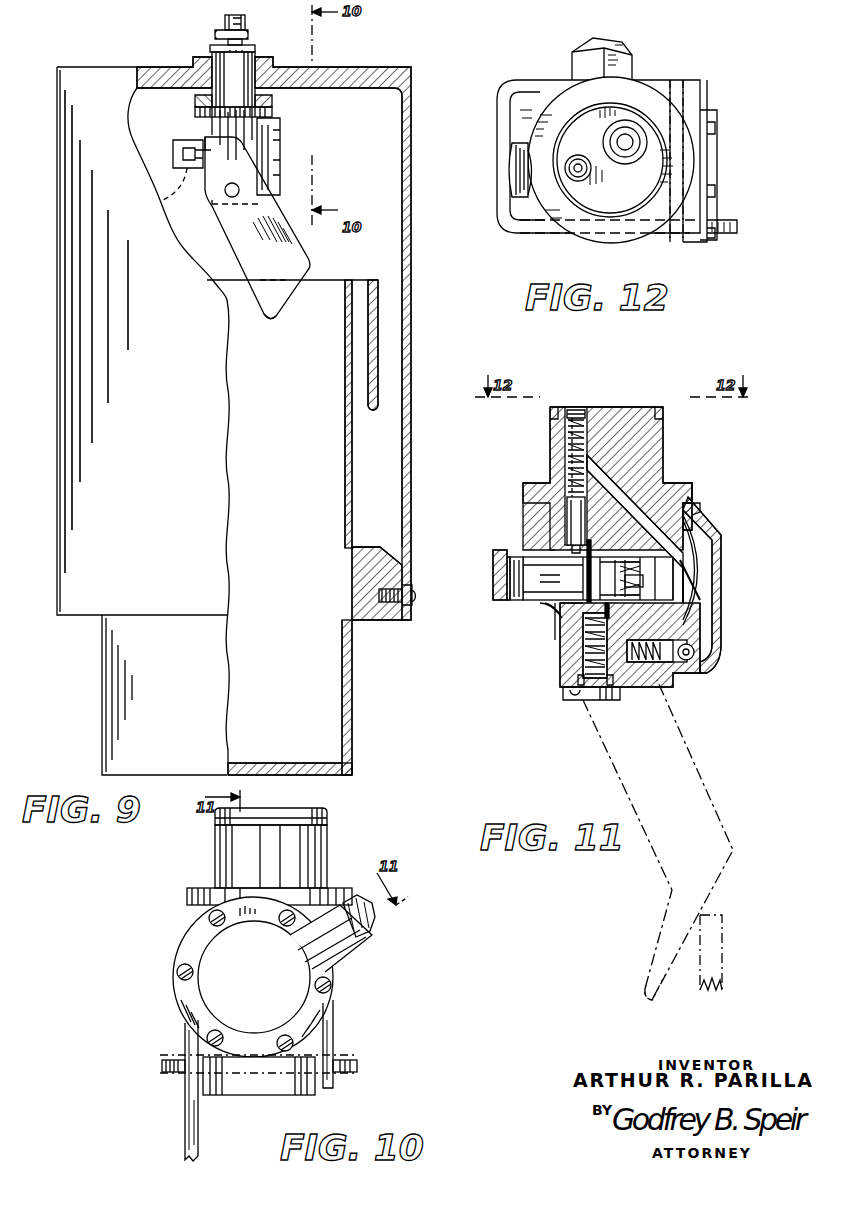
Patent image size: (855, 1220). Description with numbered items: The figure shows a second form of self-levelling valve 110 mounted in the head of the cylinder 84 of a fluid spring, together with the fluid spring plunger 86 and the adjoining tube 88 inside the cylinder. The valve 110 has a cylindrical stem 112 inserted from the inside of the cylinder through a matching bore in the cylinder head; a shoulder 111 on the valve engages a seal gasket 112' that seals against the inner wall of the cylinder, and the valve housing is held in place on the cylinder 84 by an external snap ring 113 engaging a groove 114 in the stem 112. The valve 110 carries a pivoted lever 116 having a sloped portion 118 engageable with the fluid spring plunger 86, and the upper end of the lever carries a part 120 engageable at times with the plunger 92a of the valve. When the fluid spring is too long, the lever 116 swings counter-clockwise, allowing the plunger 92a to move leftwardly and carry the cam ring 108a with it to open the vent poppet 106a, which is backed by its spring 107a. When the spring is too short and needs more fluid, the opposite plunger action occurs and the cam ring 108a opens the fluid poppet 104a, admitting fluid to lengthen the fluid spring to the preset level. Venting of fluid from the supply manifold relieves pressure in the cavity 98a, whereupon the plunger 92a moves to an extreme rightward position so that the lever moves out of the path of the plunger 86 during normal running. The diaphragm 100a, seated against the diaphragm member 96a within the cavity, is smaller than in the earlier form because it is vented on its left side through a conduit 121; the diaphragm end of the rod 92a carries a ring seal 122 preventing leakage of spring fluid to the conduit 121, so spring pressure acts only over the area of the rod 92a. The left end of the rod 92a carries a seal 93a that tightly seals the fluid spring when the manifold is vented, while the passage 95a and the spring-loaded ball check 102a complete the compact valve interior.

In FIG. 9, the cylinder 84 is at (402, 159).
In FIG. 9, the fluid spring plunger 86 is at (342, 636).
In FIG. 11, the fluid spring plunger 86 is at (722, 937).
In FIG. 9, the inner tube 88 is at (352, 410).
In FIG. 9, the plunger 92a is at (165, 202).
In FIG. 12, the plunger 92a is at (525, 200).
In FIG. 11, the plunger 92a is at (523, 601).
In FIG. 11, the seal 93a is at (548, 536).
In FIG. 12, the passage 95a is at (633, 138).
In FIG. 11, the passage 95a is at (630, 410).
In FIG. 11, the diaphragm 96a is at (692, 497).
In FIG. 11, the cavity 98a is at (697, 573).
In FIG. 11, the diaphragm 100a is at (686, 616).
In FIG. 11, the spring and ball 102a is at (696, 655).
In FIG. 11, the fluid poppet 104a is at (580, 640).
In FIG. 11, the vent poppet 106a is at (577, 512).
In FIG. 12, the spring 107a is at (578, 172).
In FIG. 11, the spring 107a is at (590, 392).
In FIG. 11, the cam ring 108a is at (560, 612).
In FIG. 9, the self-levelling valve 110 is at (284, 135).
In FIG. 10, the self-levelling valve 110 is at (288, 1103).
In FIG. 12, the self-levelling valve 110 is at (660, 77).
In FIG. 11, the self-levelling valve 110 is at (676, 458).
In FIG. 9, the shoulder 111 is at (196, 116).
In FIG. 10, the shoulder 111 is at (187, 896).
In FIG. 9, the cylindrical stem 112 is at (267, 102).
In FIG. 10, the cylindrical stem 112 is at (292, 856).
In FIG. 9, the seal gasket 112' is at (209, 98).
In FIG. 9, the external snap ring 113 is at (212, 48).
In FIG. 10, the groove 114 is at (327, 821).
In FIG. 9, the pivoted lever 116 is at (302, 245).
In FIG. 10, the pivoted lever 116 is at (185, 1113).
In FIG. 12, the pivoted lever 116 is at (720, 225).
In FIG. 11, the pivoted lever 116 is at (721, 800).
In FIG. 9, the sloped portion 118 is at (278, 310).
In FIG. 11, the sloped portion 118 is at (712, 904).
In FIG. 9, the part 120 is at (173, 152).
In FIG. 12, the part 120 is at (505, 137).
In FIG. 11, the part 120 is at (493, 565).
In FIG. 11, the conduit 121 is at (678, 478).
In FIG. 11, the ring seal 122 is at (650, 578).